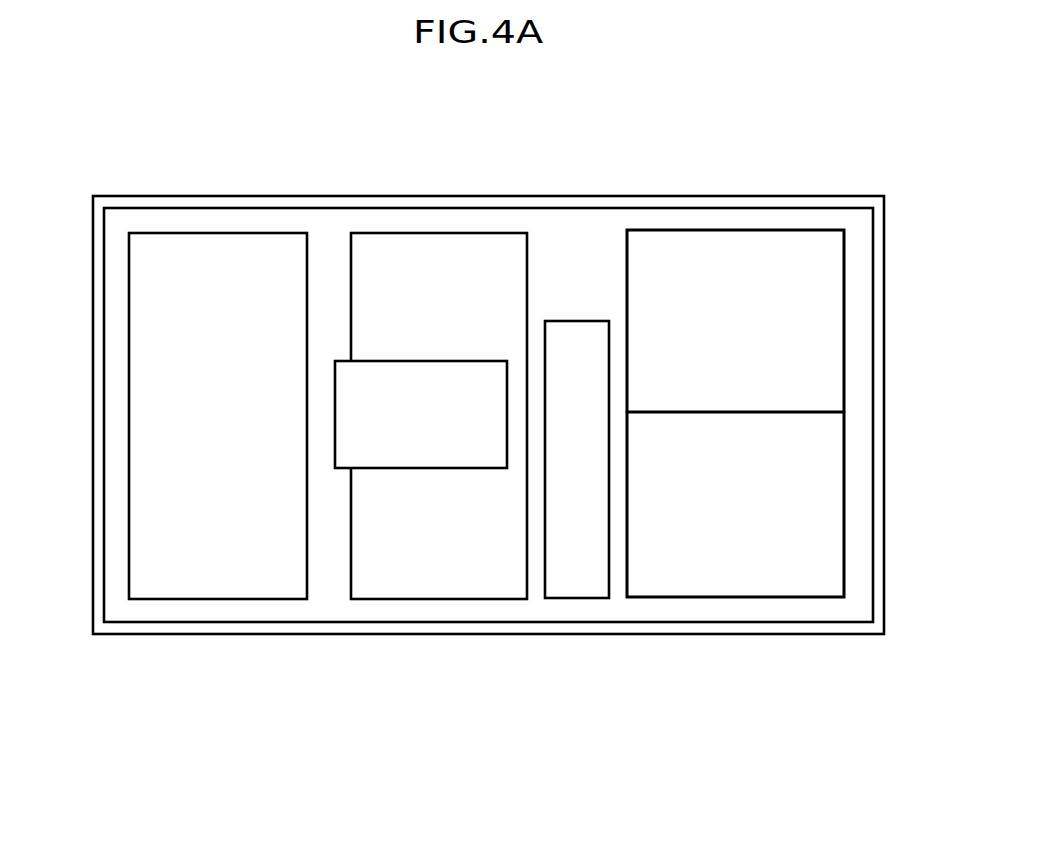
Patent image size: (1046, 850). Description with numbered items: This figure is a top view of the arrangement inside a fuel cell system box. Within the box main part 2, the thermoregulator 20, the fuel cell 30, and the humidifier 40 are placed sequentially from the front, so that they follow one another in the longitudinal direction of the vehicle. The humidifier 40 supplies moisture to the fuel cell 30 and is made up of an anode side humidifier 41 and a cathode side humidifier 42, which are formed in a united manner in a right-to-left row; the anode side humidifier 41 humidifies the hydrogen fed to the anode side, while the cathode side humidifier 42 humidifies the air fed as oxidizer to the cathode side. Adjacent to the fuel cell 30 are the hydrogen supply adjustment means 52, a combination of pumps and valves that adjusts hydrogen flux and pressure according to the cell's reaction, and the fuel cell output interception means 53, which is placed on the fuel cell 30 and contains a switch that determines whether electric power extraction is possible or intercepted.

The box main part 2 is at (326, 633).
The thermoregulator 20 is at (219, 231).
The fuel cell 30 is at (410, 263).
The fuel cell output interception means 53 is at (427, 400).
The hydrogen supply adjustment means 52 is at (580, 552).
The humidifier 40 is at (735, 422).
The anode side humidifier 41 is at (737, 267).
The cathode side humidifier 42 is at (747, 552).